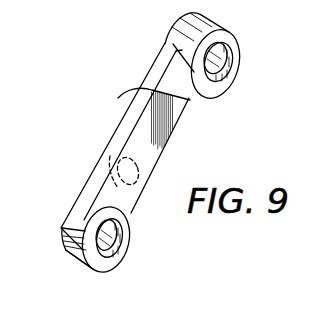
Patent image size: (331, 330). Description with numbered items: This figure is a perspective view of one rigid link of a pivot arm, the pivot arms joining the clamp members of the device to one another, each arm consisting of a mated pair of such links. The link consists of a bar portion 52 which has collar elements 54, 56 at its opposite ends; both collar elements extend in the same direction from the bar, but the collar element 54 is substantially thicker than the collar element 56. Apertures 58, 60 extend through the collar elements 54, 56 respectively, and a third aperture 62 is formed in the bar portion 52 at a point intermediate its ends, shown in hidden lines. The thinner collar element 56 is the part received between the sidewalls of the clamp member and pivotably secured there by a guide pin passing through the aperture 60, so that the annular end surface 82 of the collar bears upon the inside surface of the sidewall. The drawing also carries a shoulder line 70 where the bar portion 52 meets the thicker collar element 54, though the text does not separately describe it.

The bar portion 52 is at (166, 141).
The collar element 54 is at (183, 50).
The collar element 56 is at (62, 245).
The aperture 58 is at (233, 68).
The aperture 60 is at (118, 247).
The third aperture 62 is at (104, 190).
The shoulder between arm and boss 70 is at (140, 100).
The annular end surface 82 is at (98, 269).